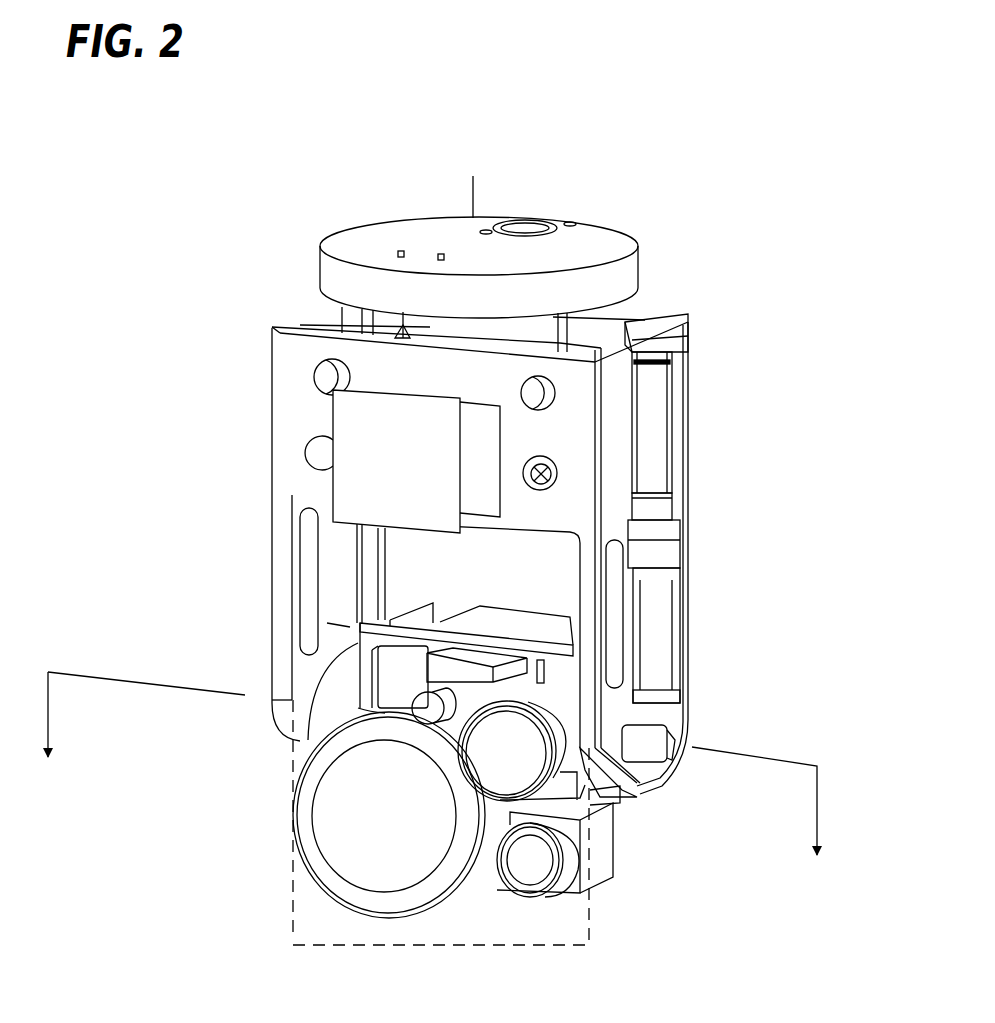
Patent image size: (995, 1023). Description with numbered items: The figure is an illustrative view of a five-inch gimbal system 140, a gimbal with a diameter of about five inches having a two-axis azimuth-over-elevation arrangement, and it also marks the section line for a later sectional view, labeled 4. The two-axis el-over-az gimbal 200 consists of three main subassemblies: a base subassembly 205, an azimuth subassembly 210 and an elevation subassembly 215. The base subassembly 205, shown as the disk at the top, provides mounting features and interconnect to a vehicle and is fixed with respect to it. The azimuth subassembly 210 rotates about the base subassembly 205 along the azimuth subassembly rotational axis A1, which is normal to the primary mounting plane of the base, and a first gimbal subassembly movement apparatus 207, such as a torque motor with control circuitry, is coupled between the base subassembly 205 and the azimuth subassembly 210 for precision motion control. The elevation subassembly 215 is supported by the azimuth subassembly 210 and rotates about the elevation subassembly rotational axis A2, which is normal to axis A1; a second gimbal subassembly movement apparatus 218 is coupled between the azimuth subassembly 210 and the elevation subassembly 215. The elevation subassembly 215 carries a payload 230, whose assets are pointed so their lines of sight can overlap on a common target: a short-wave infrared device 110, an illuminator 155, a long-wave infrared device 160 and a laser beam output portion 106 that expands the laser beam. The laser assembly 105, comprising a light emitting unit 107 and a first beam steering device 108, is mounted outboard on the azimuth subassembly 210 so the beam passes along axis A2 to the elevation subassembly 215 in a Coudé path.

The 5-inch gimbal system 140 is at (586, 178).
The two-axis el-over-az gimbal 200 is at (600, 261).
The base subassembly 205 is at (368, 230).
The first gimbal subassembly movement apparatus 207 is at (430, 327).
The azimuth subassembly 210 is at (280, 506).
The laser assembly 105 is at (655, 440).
The light emitting unit 107 is at (663, 613).
The first beam steering device 108 is at (652, 738).
The second gimbal subassembly movement apparatus 218 is at (350, 657).
The elevation subassembly 215 is at (375, 660).
The illuminator 155 is at (420, 708).
The short-wave infrared (SWIR) device 110 is at (345, 795).
The laser beam output portion 106 is at (510, 732).
The long-wave infrared (LWIR) device 160 is at (537, 866).
The payload 230 is at (375, 946).
The azimuth subassembly rotational axis A1 is at (473, 198).
The elevation subassembly rotational axis A2 is at (195, 690).
The section line 4- 4 is at (427, 778).